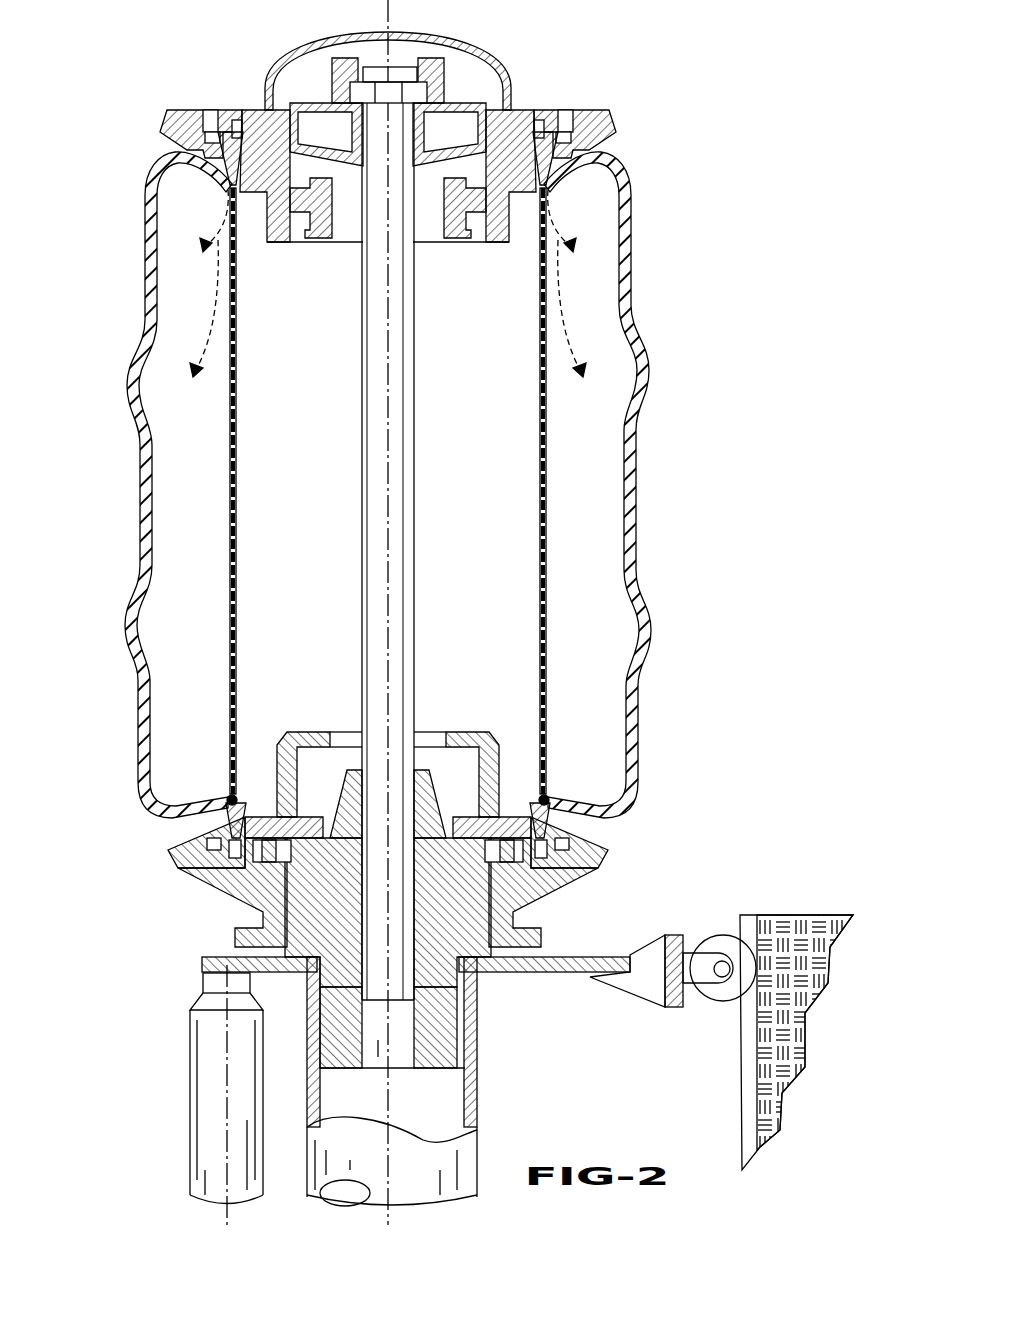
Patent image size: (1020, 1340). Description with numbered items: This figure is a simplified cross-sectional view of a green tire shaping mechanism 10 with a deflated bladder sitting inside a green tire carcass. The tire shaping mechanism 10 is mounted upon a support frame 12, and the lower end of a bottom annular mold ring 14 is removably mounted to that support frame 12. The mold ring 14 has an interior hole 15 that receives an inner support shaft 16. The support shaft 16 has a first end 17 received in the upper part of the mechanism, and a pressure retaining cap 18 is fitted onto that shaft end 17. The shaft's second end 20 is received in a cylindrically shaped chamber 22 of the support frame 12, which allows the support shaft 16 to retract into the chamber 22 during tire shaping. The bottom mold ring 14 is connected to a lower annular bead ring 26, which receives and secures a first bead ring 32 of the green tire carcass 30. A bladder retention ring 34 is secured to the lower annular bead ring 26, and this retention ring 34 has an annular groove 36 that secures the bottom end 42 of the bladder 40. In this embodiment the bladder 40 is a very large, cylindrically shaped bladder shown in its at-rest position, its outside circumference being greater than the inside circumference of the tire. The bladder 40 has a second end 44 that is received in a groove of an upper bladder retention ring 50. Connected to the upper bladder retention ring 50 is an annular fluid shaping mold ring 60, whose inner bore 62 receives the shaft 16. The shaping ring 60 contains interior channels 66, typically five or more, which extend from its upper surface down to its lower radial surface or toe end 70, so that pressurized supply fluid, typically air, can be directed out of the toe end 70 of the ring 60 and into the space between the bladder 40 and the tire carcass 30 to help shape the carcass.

The green tire shaping mechanism 10 is at (95, 98).
The support frame 12 is at (578, 972).
The bottom annular mold ring 14 is at (562, 894).
The interior hole 15 is at (367, 850).
The inner support shaft 16 is at (405, 384).
The first end of support shaft 17 is at (407, 130).
The pressure retaining cap 18 is at (437, 34).
The second end of support shaft 20 is at (400, 988).
The cylindrically shaped chamber 22 is at (474, 1080).
The lower annular bead ring 26 is at (170, 844).
The green tire carcass 30 is at (143, 434).
The first bead ring 32 is at (222, 798).
The bladder retention ring 34 is at (478, 736).
The annular groove 36 is at (540, 798).
The bladder 40 is at (236, 484).
The bottom end of bladder 42 is at (254, 798).
The second end of bladder 44 is at (505, 198).
The upper bladder retention ring 50 is at (277, 203).
The annular fluid shaping mold ring 60 is at (165, 112).
The inner bore 62 is at (372, 130).
The interior channels 66 is at (218, 166).
The toe end 70 is at (226, 192).